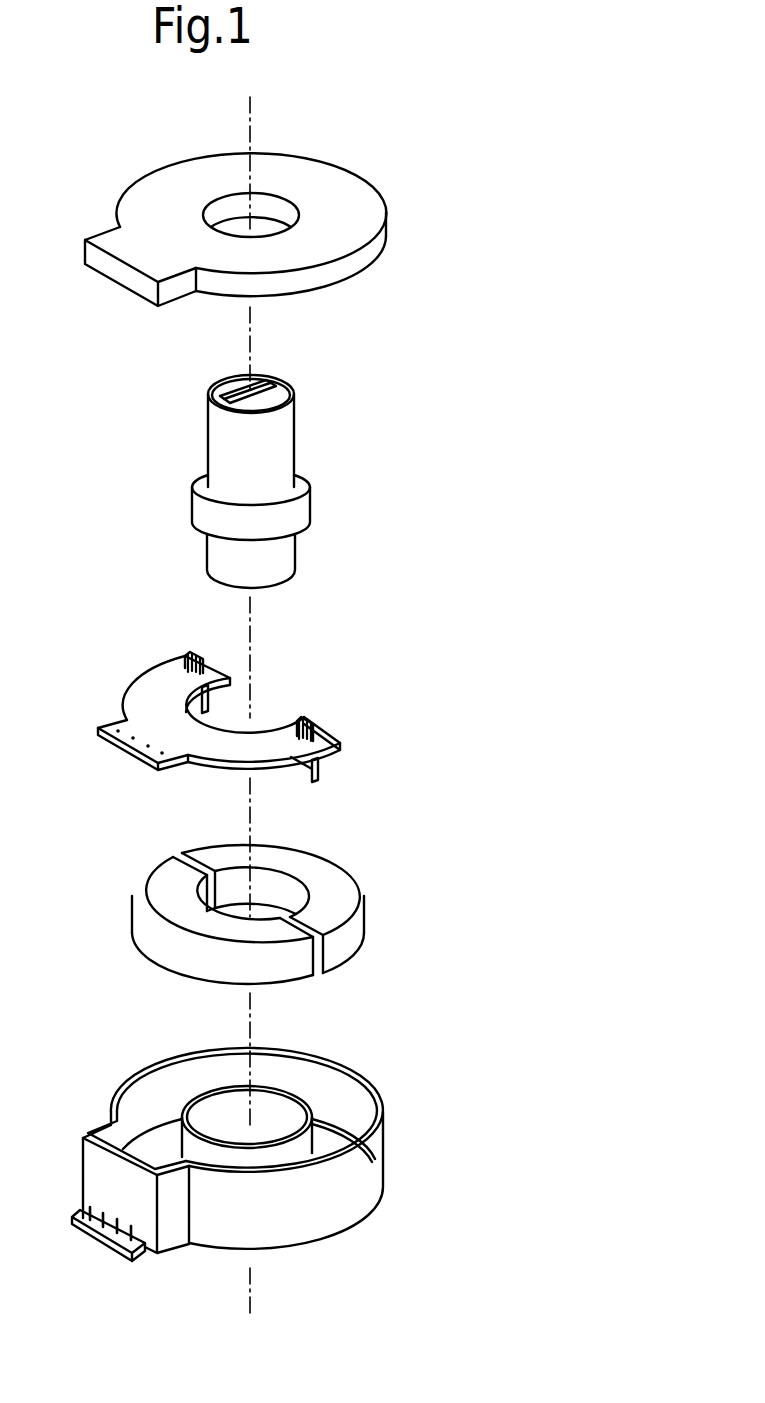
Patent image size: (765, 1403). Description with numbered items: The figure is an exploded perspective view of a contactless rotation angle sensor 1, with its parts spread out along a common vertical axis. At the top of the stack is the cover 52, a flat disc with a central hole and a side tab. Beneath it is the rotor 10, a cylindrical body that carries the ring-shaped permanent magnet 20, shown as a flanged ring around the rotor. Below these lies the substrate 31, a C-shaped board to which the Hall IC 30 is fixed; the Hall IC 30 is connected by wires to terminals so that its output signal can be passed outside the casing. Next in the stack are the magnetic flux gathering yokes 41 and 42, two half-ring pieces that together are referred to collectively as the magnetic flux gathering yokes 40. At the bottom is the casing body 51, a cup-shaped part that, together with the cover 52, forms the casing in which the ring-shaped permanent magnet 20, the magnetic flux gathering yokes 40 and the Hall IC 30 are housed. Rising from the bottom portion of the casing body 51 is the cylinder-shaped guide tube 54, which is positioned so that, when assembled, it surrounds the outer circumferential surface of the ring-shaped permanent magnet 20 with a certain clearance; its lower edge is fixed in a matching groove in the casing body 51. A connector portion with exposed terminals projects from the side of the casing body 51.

The rotation angle sensor 1 is at (452, 575).
The rotor 10 is at (283, 433).
The ring-shaped permanent magnet 20 is at (297, 508).
The Hall IC 30 is at (208, 697).
The substrate 31 is at (155, 683).
The magnetic flux gathering yokes 40 is at (299, 932).
The magnetic flux gathering yoke 41 is at (340, 957).
The magnetic flux gathering yoke 42 is at (292, 970).
The casing body 51 is at (365, 1180).
The cover 52 is at (375, 250).
The guide tube 54 is at (293, 1092).